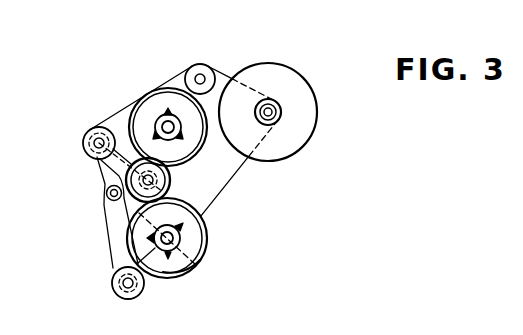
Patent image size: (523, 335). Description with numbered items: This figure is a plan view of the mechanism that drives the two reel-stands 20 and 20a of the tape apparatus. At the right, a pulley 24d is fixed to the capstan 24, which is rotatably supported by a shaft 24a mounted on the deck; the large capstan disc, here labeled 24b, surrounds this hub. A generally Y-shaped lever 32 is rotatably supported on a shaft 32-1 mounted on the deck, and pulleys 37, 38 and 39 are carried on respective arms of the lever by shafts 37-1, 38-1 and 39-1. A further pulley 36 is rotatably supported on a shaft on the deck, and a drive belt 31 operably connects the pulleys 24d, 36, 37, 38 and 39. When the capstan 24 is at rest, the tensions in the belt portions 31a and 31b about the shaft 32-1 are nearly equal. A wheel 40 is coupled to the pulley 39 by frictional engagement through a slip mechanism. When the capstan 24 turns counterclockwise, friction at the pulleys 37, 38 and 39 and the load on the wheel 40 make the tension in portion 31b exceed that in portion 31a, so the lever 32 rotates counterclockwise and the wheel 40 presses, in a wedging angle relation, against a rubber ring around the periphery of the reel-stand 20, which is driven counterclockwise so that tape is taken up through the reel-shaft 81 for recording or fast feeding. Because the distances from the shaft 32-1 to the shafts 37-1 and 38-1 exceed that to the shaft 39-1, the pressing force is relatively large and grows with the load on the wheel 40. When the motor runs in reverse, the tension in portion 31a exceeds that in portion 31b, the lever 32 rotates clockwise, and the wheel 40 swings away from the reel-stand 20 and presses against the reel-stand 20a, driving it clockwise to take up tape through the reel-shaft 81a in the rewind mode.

The reel-stand 20 is at (166, 96).
The reel-stand 20a is at (199, 259).
The capstan 24 is at (282, 108).
The shaft 24a is at (283, 116).
The large pulley disc 24b is at (300, 76).
The pulley 24d is at (262, 96).
The drive belt 31 is at (221, 72).
The portion of the belt 31a is at (118, 111).
The portion of the belt 31b is at (222, 189).
The lever 32 is at (116, 230).
The shaft 32-1 is at (107, 195).
The pulley 36 is at (200, 73).
The pulley 37 is at (86, 130).
The shaft 37-1 is at (94, 146).
The pulley 38 is at (120, 297).
The shaft 38-1 is at (123, 283).
The pulley 39 is at (171, 175).
The shaft 39-1 is at (136, 177).
The wheel 40 is at (170, 188).
The reel-shaft 81 is at (160, 116).
The reel-shaft 81a is at (181, 238).